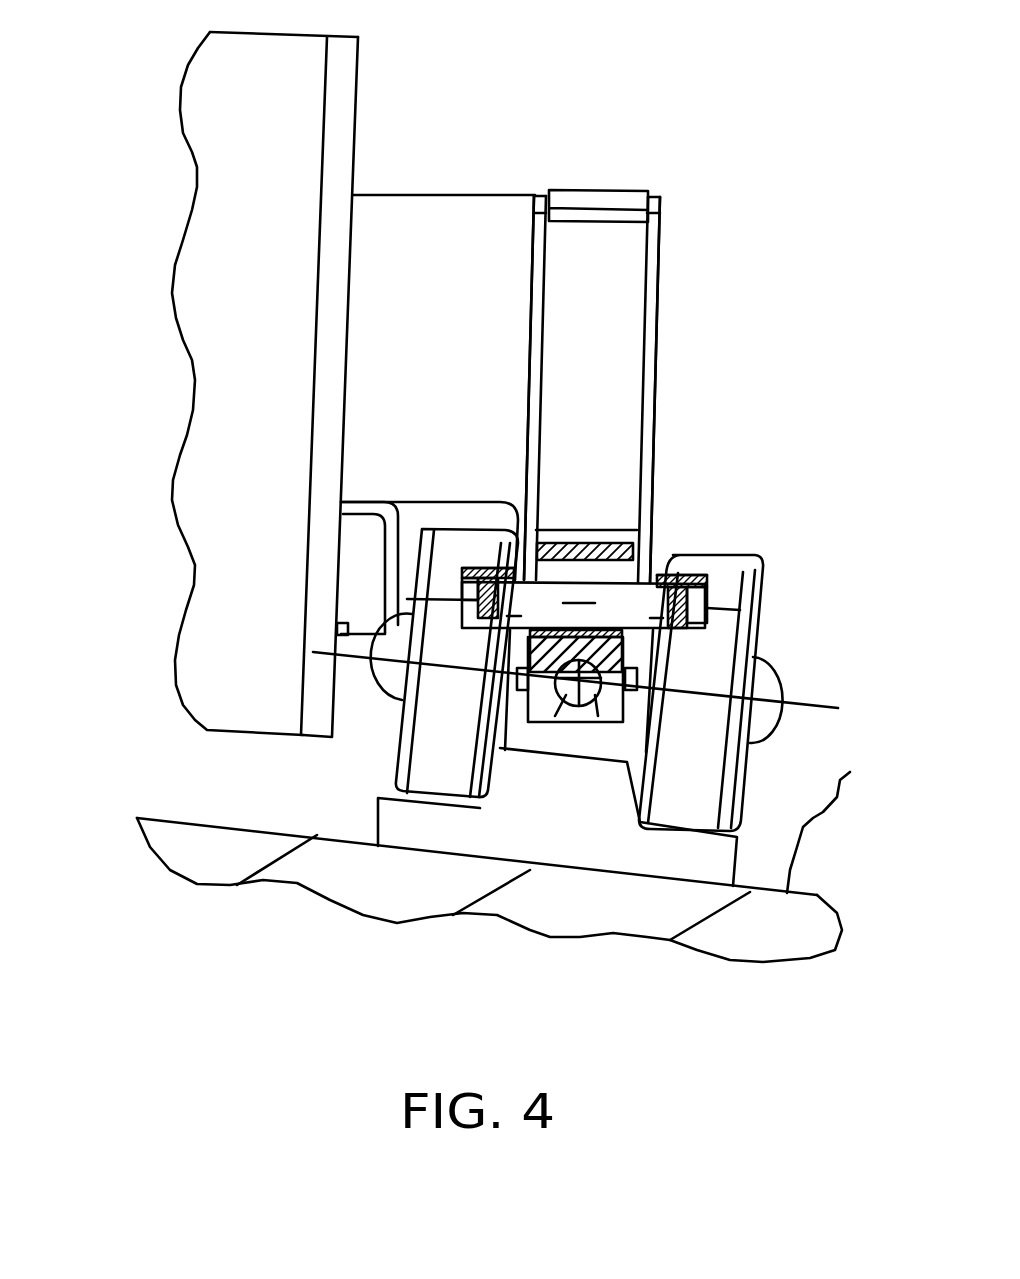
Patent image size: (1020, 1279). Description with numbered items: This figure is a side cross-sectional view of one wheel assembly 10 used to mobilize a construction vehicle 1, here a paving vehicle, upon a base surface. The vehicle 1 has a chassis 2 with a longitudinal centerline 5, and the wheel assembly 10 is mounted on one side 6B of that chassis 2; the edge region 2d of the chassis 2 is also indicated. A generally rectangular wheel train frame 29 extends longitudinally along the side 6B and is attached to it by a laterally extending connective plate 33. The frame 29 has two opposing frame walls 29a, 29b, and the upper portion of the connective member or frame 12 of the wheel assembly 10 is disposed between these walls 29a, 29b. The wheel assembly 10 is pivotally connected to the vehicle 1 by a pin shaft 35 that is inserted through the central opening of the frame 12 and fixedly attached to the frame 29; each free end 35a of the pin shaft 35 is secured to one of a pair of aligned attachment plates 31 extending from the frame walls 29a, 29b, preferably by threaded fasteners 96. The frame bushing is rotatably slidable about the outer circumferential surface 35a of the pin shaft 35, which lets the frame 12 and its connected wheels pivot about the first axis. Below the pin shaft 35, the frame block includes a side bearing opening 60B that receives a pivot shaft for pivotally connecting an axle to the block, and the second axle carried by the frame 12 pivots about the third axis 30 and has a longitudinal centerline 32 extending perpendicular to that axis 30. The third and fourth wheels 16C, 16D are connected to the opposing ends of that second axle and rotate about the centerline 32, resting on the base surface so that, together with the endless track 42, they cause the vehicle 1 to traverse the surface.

The construction vehicle 1 is at (117, 225).
The chassis 2 is at (225, 317).
The wall edge 2d is at (357, 102).
The side of the chassis 6B is at (355, 140).
The wheel assembly 10 is at (828, 502).
The frame 12 is at (612, 535).
The third wheel 16C is at (763, 612).
The fourth wheel 16D is at (420, 747).
The frame 29 is at (657, 308).
The frame wall 29a is at (653, 410).
The frame wall 29b is at (528, 370).
The third axis 30 is at (562, 700).
The attachment plate 31 is at (470, 555).
The longitudinal centerline 32 is at (838, 708).
The connective plate 33 is at (480, 233).
The pin shaft 35 is at (612, 590).
The free end of the pin shaft 35a is at (555, 530).
The endless track 42 is at (587, 835).
The longitudinal centerline 5 is at (508, 852).
The side bearing opening 60B is at (592, 725).
The threaded fastener 96 is at (585, 618).